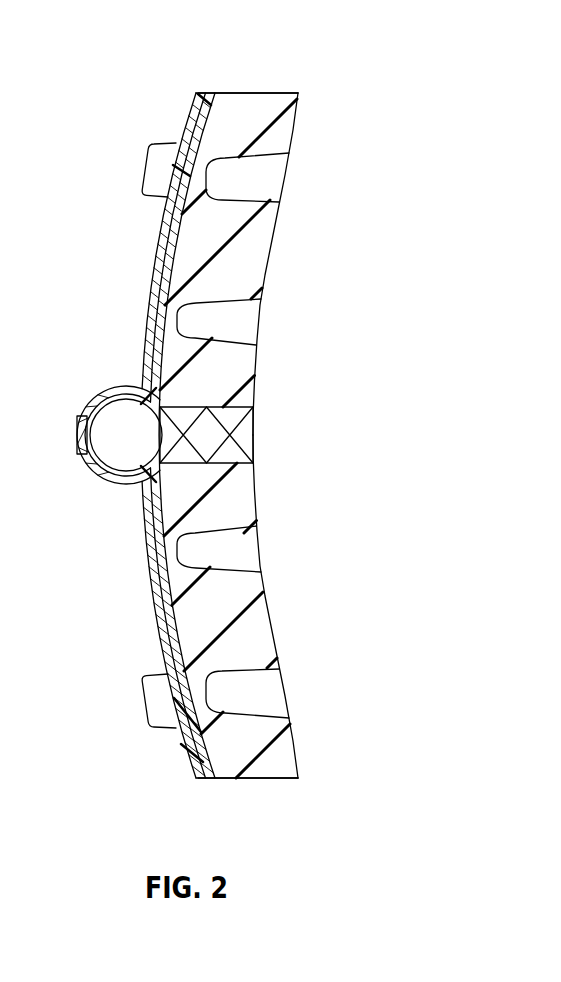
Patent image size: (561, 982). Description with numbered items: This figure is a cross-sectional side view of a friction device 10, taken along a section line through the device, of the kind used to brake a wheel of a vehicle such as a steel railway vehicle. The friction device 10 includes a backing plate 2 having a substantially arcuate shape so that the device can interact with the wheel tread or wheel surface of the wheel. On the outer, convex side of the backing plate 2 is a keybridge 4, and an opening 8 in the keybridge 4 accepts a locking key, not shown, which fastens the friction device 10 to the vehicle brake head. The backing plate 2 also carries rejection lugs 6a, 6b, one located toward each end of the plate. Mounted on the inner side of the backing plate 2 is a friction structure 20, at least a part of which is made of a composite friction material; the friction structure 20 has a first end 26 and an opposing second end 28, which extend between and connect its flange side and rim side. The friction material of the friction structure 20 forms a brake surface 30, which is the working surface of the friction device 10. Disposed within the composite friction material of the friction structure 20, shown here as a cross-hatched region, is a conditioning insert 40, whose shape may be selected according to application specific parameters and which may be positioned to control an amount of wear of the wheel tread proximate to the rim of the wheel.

The friction device 10 is at (311, 50).
The backing plate 2 is at (149, 280).
The keybridge 4 is at (98, 478).
The rejection lug 6a is at (141, 167).
The rejection lug 6b is at (141, 702).
The opening 8 is at (108, 433).
The friction structure 20 is at (243, 256).
The first end 26 is at (242, 93).
The second end 28 is at (243, 778).
The brake surface 30 is at (267, 611).
The conditioning insert 40 is at (213, 438).